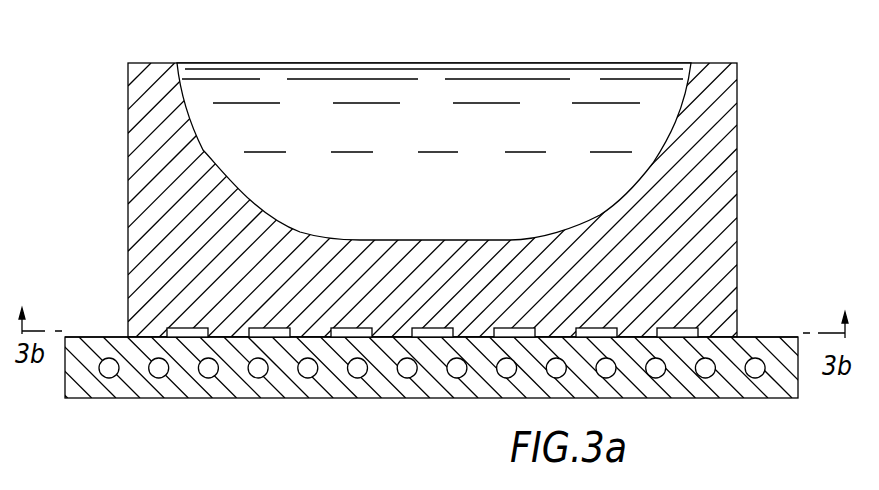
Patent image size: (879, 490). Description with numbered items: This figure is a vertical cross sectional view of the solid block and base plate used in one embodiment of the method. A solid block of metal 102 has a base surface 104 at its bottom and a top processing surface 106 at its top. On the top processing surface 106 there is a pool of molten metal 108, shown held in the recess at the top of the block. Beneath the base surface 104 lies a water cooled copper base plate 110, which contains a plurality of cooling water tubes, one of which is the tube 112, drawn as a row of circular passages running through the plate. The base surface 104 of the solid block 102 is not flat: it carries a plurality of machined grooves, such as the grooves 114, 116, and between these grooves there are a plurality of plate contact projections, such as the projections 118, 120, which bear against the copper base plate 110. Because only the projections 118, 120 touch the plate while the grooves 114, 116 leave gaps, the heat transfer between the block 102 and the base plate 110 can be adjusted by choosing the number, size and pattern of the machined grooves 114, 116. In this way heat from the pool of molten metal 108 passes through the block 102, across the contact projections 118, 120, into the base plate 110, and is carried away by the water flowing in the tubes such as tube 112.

The solid block of metal 102 is at (399, 174).
The base surface 104 is at (233, 358).
The top processing surface 106 is at (143, 63).
The pool of molten metal 108 is at (272, 82).
The water cooled copper base plate 110 is at (780, 387).
The cooling water tube 112 is at (705, 378).
The machined groove 114 is at (188, 338).
The machined groove 116 is at (368, 338).
The plate contact projection 118 is at (249, 337).
The plate contact projection 120 is at (411, 337).